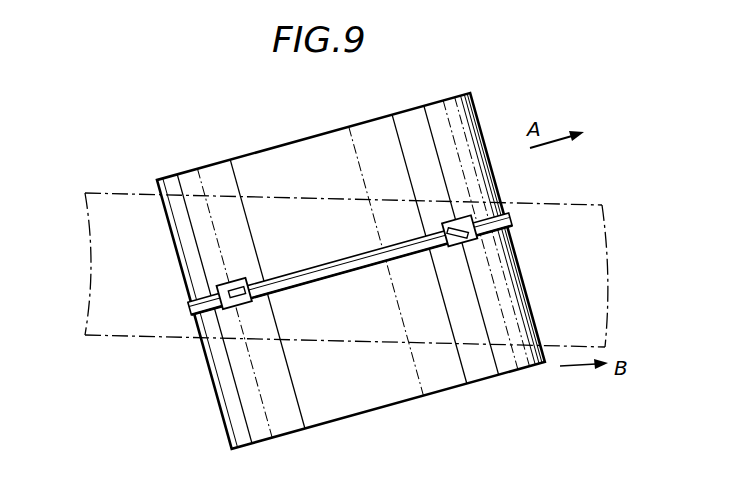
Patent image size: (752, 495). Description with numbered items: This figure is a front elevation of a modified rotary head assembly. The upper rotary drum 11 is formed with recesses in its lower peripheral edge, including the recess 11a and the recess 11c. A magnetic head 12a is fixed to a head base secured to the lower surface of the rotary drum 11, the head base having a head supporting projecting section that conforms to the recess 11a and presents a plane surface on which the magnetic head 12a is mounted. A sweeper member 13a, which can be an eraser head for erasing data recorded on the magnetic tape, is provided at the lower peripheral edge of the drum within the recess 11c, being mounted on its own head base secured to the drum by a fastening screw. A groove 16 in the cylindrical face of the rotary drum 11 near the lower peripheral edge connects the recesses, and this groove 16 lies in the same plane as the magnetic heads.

The upper rotary drum 11 is at (200, 160).
The recess 11a is at (237, 288).
The recess 11c is at (474, 218).
The magnetic head 12a is at (232, 306).
The sweeper member 13a is at (482, 246).
The groove 16 is at (190, 302).